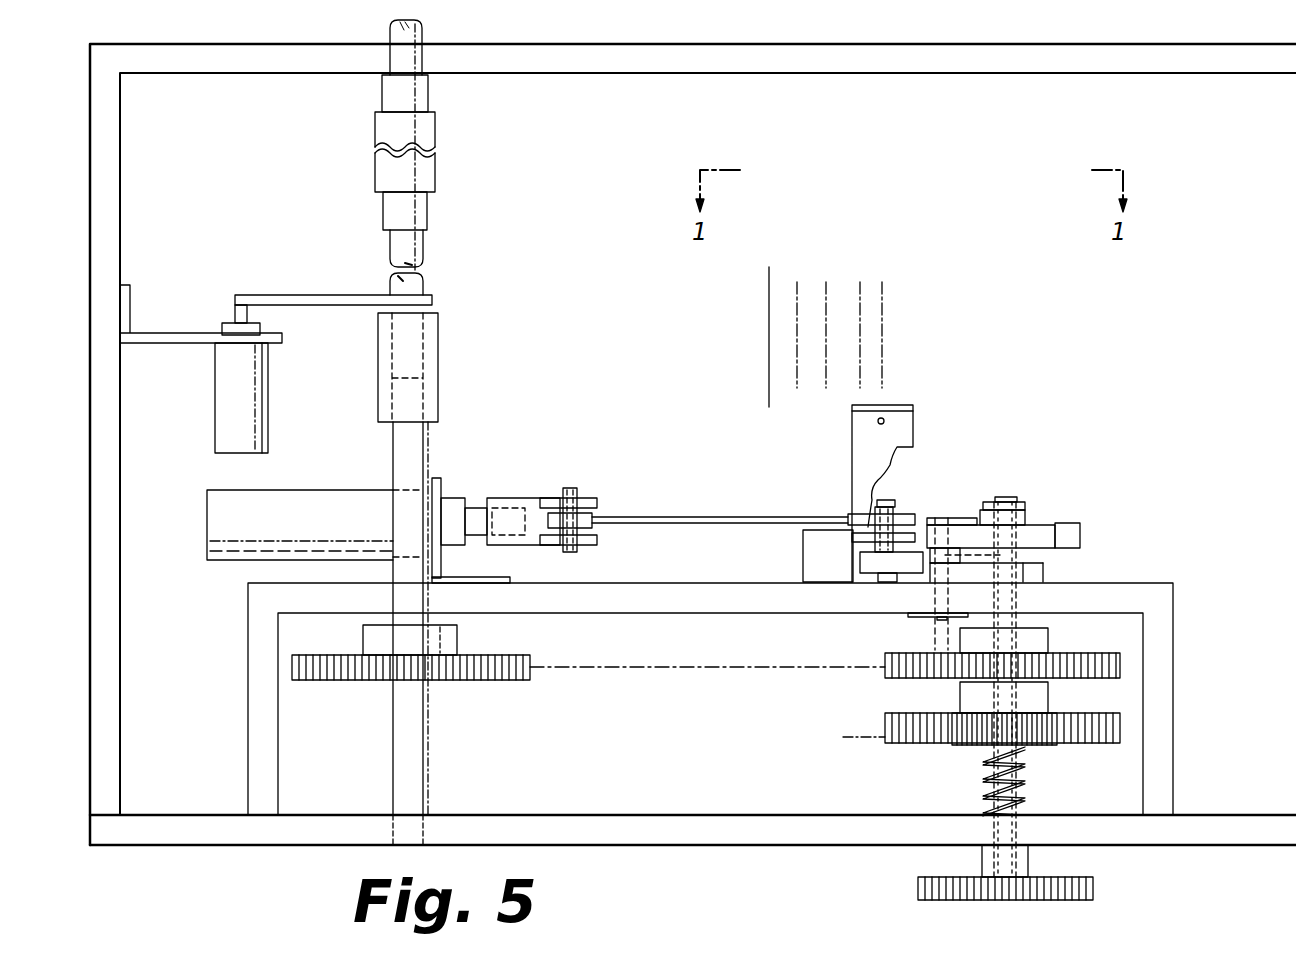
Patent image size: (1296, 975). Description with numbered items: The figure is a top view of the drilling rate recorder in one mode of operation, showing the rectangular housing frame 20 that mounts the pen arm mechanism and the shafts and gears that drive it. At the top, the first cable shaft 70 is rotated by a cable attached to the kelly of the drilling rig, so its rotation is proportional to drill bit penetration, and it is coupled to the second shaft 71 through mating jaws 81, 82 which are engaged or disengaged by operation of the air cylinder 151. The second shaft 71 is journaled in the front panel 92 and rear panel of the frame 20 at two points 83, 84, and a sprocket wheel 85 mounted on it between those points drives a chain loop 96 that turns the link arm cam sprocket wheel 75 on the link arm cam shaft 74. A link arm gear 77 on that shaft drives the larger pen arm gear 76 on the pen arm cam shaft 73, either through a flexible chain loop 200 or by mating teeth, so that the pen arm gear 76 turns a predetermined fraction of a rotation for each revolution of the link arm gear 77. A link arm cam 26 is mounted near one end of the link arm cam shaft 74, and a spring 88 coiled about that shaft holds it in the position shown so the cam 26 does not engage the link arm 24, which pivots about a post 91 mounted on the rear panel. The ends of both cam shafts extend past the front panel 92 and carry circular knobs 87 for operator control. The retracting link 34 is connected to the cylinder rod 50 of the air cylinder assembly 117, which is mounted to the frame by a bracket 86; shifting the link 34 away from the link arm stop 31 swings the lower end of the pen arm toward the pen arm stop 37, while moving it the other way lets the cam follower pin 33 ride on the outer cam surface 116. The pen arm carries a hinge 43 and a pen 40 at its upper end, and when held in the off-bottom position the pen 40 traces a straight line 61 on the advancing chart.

The housing frame 20 is at (243, 713).
The link arm 24 is at (870, 565).
The link arm cam 26 is at (1077, 535).
The link arm stop 31 is at (1037, 572).
The cam follower pin 33 is at (902, 510).
The retracting link 34 is at (665, 487).
The pen arm stop 37 is at (797, 558).
The pen 40 is at (882, 420).
The hinge 43 is at (850, 530).
The cylinder rod 50 is at (478, 500).
The straight line 61 is at (882, 297).
The first cable shaft 70 is at (417, 62).
The second shaft 71 is at (392, 248).
The pen arm cam shaft 73 is at (1002, 500).
The link arm cam shaft 74 is at (1012, 503).
The link arm cam sprocket wheel 75 is at (1122, 665).
The pen arm gear 76 is at (1122, 718).
The link arm gear 77 is at (1055, 745).
The mating jaw 81 is at (430, 122).
The mating jaw 82 is at (430, 178).
The journal point 83 is at (392, 580).
The journal point 84 is at (393, 817).
The sprocket wheel 85 is at (303, 680).
The bracket 86 is at (437, 478).
The circular knob 87 is at (1095, 887).
The spring 88 is at (983, 783).
The post 91 is at (947, 620).
The front panel 92 is at (243, 848).
The chain loop 96 is at (597, 667).
The outer cam surface 116 is at (930, 518).
The air cylinder assembly 117 is at (343, 478).
The air cylinder 151 is at (268, 418).
The flexible chain loop 200 is at (841, 740).